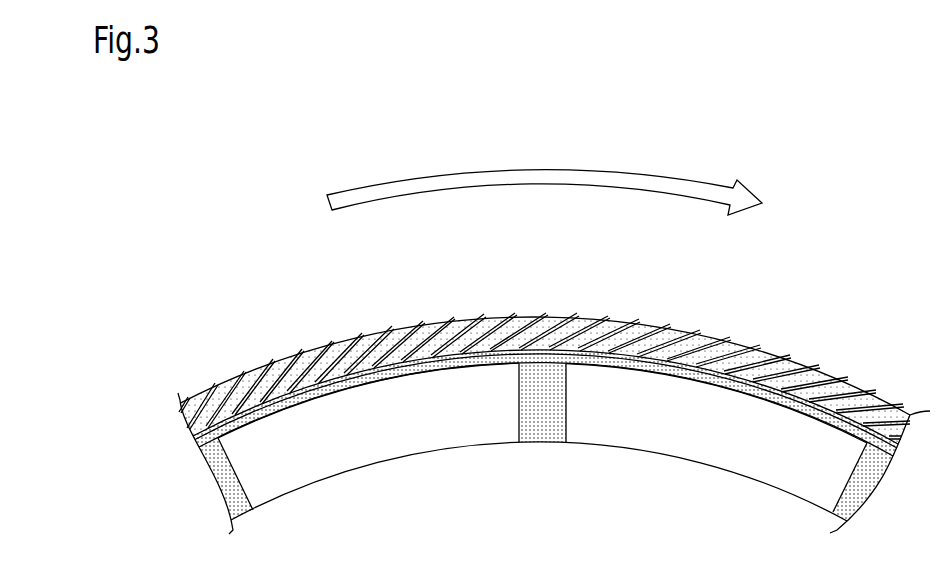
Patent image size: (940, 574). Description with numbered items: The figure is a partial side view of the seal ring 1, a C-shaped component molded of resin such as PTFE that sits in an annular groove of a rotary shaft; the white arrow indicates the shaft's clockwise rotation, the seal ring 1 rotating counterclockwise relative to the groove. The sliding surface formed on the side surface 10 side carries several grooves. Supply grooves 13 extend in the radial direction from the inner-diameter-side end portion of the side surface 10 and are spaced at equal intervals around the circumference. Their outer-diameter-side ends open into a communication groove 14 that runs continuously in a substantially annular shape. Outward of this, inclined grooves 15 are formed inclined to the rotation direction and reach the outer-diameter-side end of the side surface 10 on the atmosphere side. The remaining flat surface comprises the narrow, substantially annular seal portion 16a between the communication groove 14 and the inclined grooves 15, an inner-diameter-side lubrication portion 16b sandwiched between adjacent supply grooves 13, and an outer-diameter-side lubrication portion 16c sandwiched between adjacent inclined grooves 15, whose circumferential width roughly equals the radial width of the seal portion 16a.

The seal ring 1 is at (301, 321).
The side surface 10 is at (437, 418).
The supply grooves 13 is at (523, 405).
The communication groove 14 is at (343, 383).
The inclined grooves 15 is at (477, 317).
The seal portion 16a is at (590, 352).
The inner-diameter-side lubrication portion 16b is at (703, 433).
The outer-diameter-side lubrication portion 16c is at (710, 335).